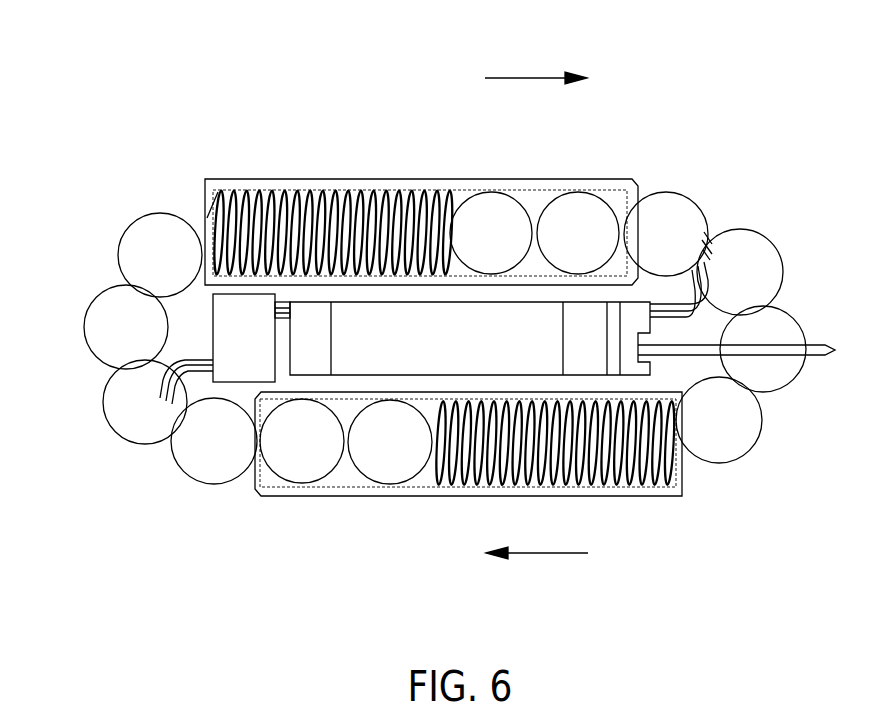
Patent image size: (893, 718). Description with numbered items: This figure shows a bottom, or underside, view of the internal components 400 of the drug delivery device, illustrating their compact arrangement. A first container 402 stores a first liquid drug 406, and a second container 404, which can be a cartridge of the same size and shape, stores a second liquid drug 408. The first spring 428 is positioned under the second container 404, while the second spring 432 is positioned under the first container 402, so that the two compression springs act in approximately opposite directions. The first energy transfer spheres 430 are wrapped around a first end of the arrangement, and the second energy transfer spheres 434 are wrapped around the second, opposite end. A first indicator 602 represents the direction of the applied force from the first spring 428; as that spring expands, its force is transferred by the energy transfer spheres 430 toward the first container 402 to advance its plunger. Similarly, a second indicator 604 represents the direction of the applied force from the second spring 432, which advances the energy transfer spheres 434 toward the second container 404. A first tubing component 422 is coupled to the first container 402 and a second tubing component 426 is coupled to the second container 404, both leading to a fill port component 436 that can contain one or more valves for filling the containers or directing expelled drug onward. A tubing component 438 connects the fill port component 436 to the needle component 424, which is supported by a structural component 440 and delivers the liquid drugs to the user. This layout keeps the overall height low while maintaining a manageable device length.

The internal components 400 is at (85, 190).
The first container 402 is at (428, 185).
The second container 404 is at (433, 488).
The first liquid drug 406 is at (534, 192).
The second liquid drug 408 is at (360, 475).
The first tubing component 422 is at (680, 306).
The needle component 424 is at (820, 345).
The second tubing component 426 is at (190, 362).
The first spring 428 is at (588, 475).
The first energy transfer spheres 430 is at (100, 327).
The second spring 432 is at (290, 196).
The second energy transfer spheres 434 is at (765, 262).
The fill port component 436 is at (238, 335).
The tubing component 438 is at (280, 318).
The structural component 440 is at (505, 337).
The first indicator 602 is at (533, 553).
The second indicator 604 is at (525, 76).